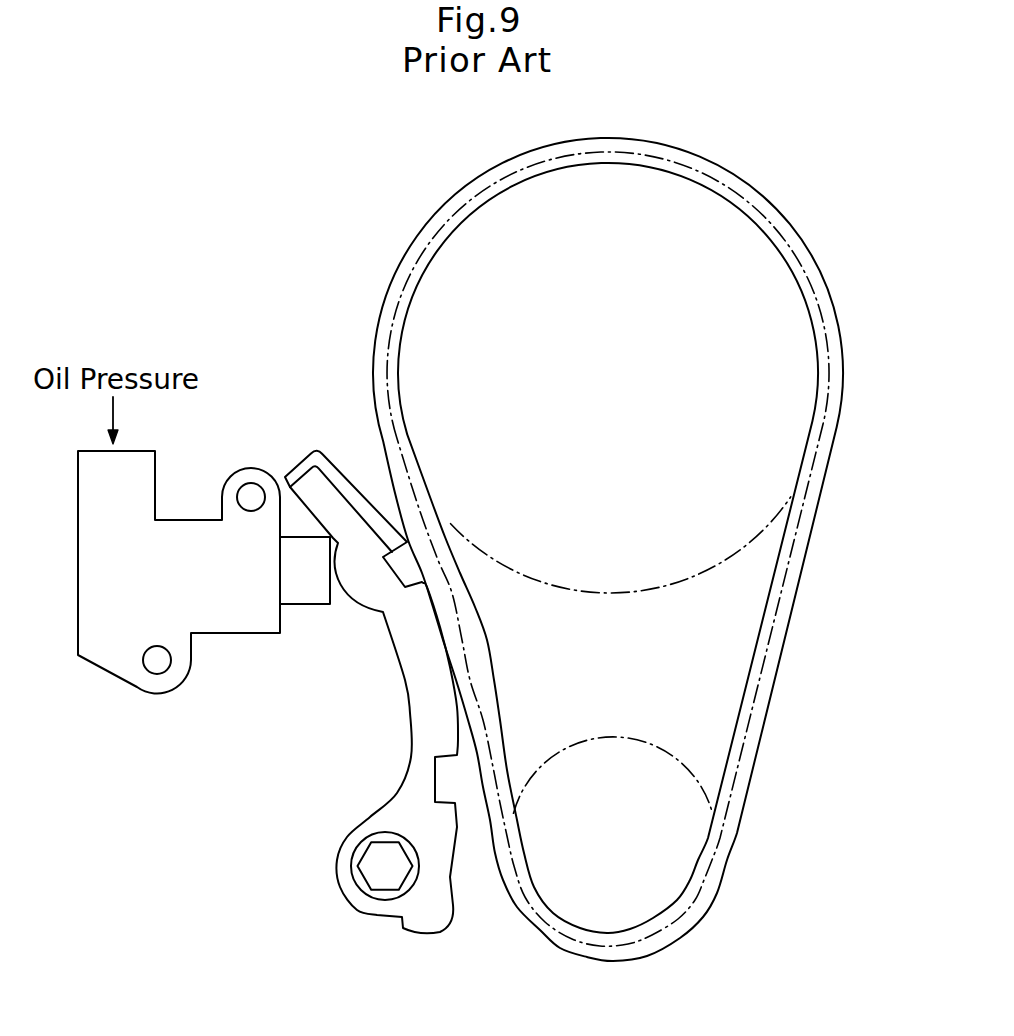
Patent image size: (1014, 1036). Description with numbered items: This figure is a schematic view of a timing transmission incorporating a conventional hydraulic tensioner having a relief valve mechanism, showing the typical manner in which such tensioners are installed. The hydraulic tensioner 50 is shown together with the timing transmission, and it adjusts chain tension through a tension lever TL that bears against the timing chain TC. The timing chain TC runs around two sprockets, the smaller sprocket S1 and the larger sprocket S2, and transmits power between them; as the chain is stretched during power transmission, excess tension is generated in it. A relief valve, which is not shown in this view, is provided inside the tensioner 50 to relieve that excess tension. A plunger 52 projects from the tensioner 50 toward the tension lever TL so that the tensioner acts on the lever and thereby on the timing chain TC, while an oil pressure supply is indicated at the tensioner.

The hydraulic tensioner 50 is at (112, 650).
The plunger 52 is at (313, 593).
The tension lever TL is at (418, 703).
The timing chain TC is at (772, 687).
The crankshaft sprocket S1 is at (660, 883).
The camshaft sprocket S2 is at (738, 240).